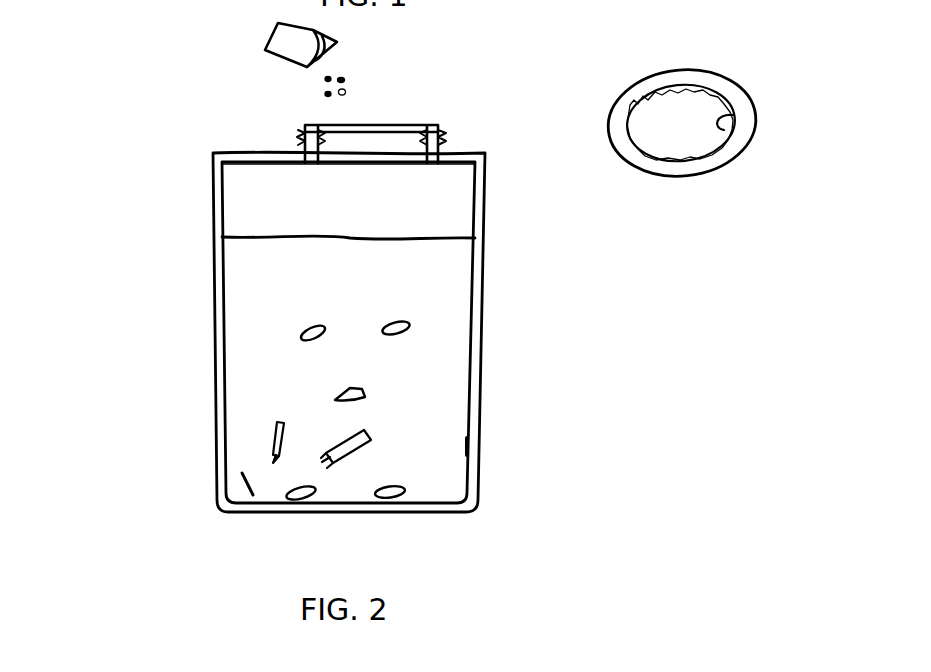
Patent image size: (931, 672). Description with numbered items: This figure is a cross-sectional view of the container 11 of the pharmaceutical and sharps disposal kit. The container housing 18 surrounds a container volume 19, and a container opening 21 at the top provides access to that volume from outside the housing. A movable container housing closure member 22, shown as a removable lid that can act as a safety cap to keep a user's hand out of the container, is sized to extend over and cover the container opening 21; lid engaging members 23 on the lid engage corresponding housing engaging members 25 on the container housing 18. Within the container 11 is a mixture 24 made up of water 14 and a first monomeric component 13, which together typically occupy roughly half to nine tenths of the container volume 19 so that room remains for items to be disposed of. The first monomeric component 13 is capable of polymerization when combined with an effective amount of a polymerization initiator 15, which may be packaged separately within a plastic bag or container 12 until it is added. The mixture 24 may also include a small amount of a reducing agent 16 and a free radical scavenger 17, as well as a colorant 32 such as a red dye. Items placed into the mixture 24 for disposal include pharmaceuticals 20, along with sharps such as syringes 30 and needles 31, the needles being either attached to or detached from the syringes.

The container 11 is at (487, 188).
The plastic bag or container 12 is at (287, 38).
The first monomeric component 13 is at (427, 285).
The water 14 is at (433, 378).
The polymerization initiator 15 is at (315, 88).
The reducing agent 16 is at (433, 424).
The free radical scavenger 17 is at (438, 458).
The container housing 18 is at (215, 282).
The container volume 19 is at (237, 197).
The pharmaceutical 20 is at (283, 490).
The container opening 21 is at (399, 111).
The movable container housing closure member 22 is at (700, 73).
The lid engaging members 23 is at (733, 125).
The mixture 24 is at (447, 317).
The housing engaging members 25 is at (452, 130).
The syringe 30 is at (290, 435).
The needle 31 is at (240, 488).
The colorant 32 is at (373, 275).